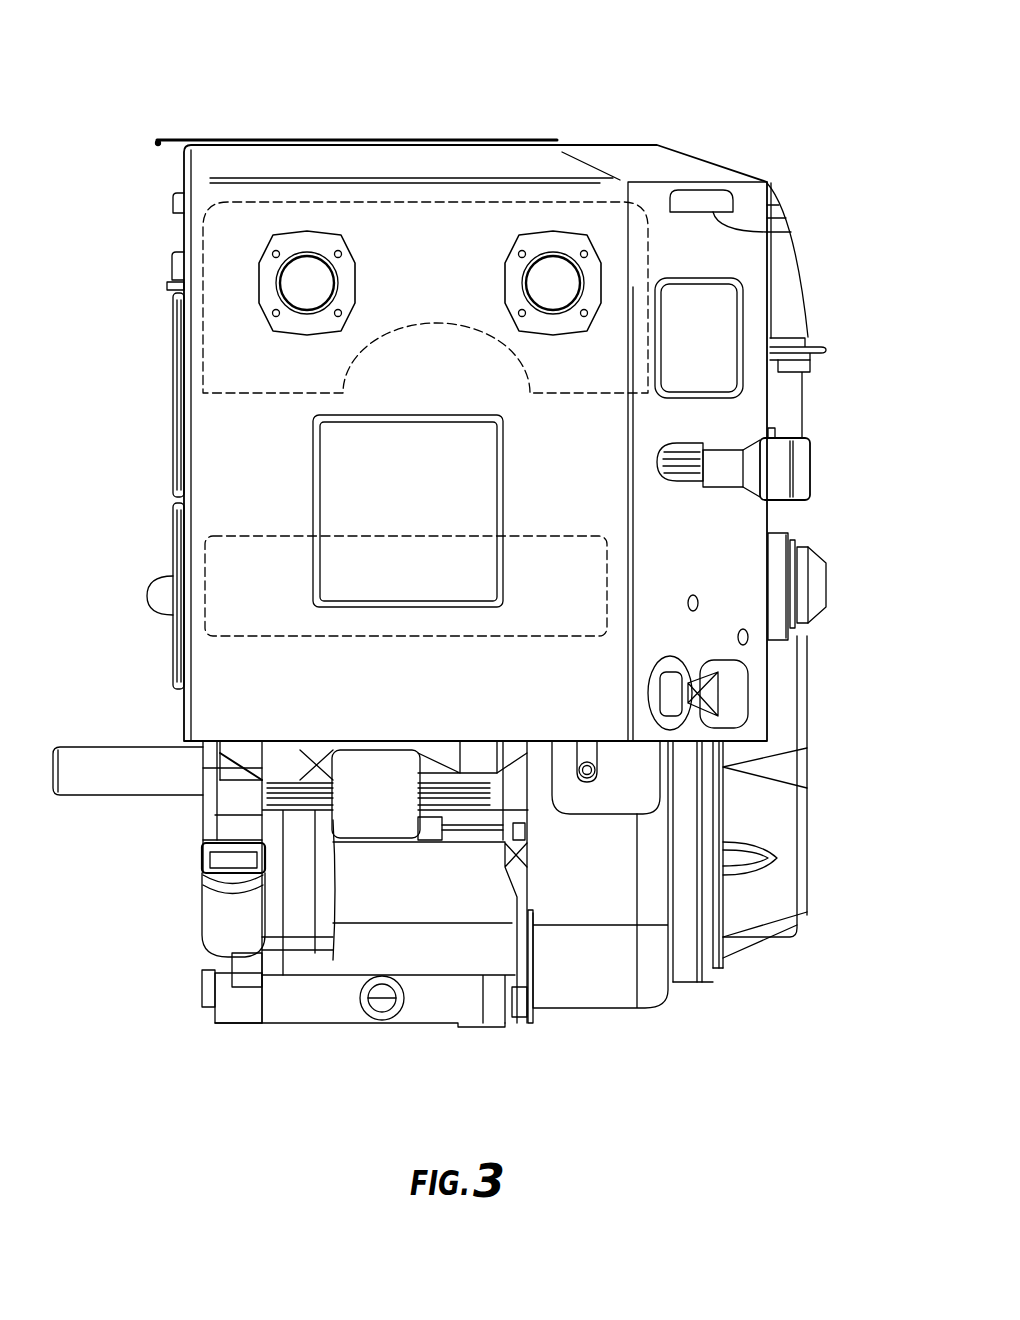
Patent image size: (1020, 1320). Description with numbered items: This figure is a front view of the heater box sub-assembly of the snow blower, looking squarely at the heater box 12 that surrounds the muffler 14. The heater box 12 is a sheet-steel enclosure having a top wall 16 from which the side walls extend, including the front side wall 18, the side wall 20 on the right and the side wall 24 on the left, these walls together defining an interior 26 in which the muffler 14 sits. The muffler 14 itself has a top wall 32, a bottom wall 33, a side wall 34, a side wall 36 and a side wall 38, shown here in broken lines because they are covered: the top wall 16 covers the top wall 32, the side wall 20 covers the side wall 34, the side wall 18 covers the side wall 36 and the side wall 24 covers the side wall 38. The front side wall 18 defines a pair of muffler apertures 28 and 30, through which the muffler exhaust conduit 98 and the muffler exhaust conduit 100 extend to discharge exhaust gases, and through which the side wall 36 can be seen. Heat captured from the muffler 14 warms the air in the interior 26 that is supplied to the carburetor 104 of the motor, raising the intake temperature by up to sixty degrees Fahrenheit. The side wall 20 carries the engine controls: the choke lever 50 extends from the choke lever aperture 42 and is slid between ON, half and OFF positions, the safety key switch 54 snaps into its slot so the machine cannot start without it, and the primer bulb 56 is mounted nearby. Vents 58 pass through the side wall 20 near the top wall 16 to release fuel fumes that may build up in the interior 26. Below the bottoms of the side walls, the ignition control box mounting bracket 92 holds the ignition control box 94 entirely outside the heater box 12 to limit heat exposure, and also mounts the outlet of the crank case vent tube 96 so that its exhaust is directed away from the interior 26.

The heater box 12 is at (235, 713).
The muffler 14 is at (293, 393).
The top wall 16 is at (512, 128).
The side wall 18 is at (416, 301).
The side wall 20 is at (710, 277).
The side wall 24 is at (170, 385).
The interior 26 is at (225, 397).
The muffler aperture 28 is at (333, 243).
The muffler aperture 30 is at (573, 243).
The top wall 32 is at (430, 190).
The bottom wall 33 is at (558, 433).
The side wall 34 is at (668, 298).
The side wall 36 is at (378, 305).
The side wall 38 is at (192, 275).
The choke lever aperture 42 is at (720, 447).
The choke lever 50 is at (780, 464).
The safety key switch 54 is at (745, 712).
The primer bulb 56 is at (823, 590).
The vents 58 is at (767, 231).
The ignition control box mounting bracket 92 is at (396, 750).
The ignition control box 94 is at (378, 825).
The crank case vent tube 96 is at (587, 778).
The muffler exhaust conduit 98 is at (297, 253).
The muffler exhaust conduit 100 is at (552, 253).
The carburetor 104 is at (330, 637).